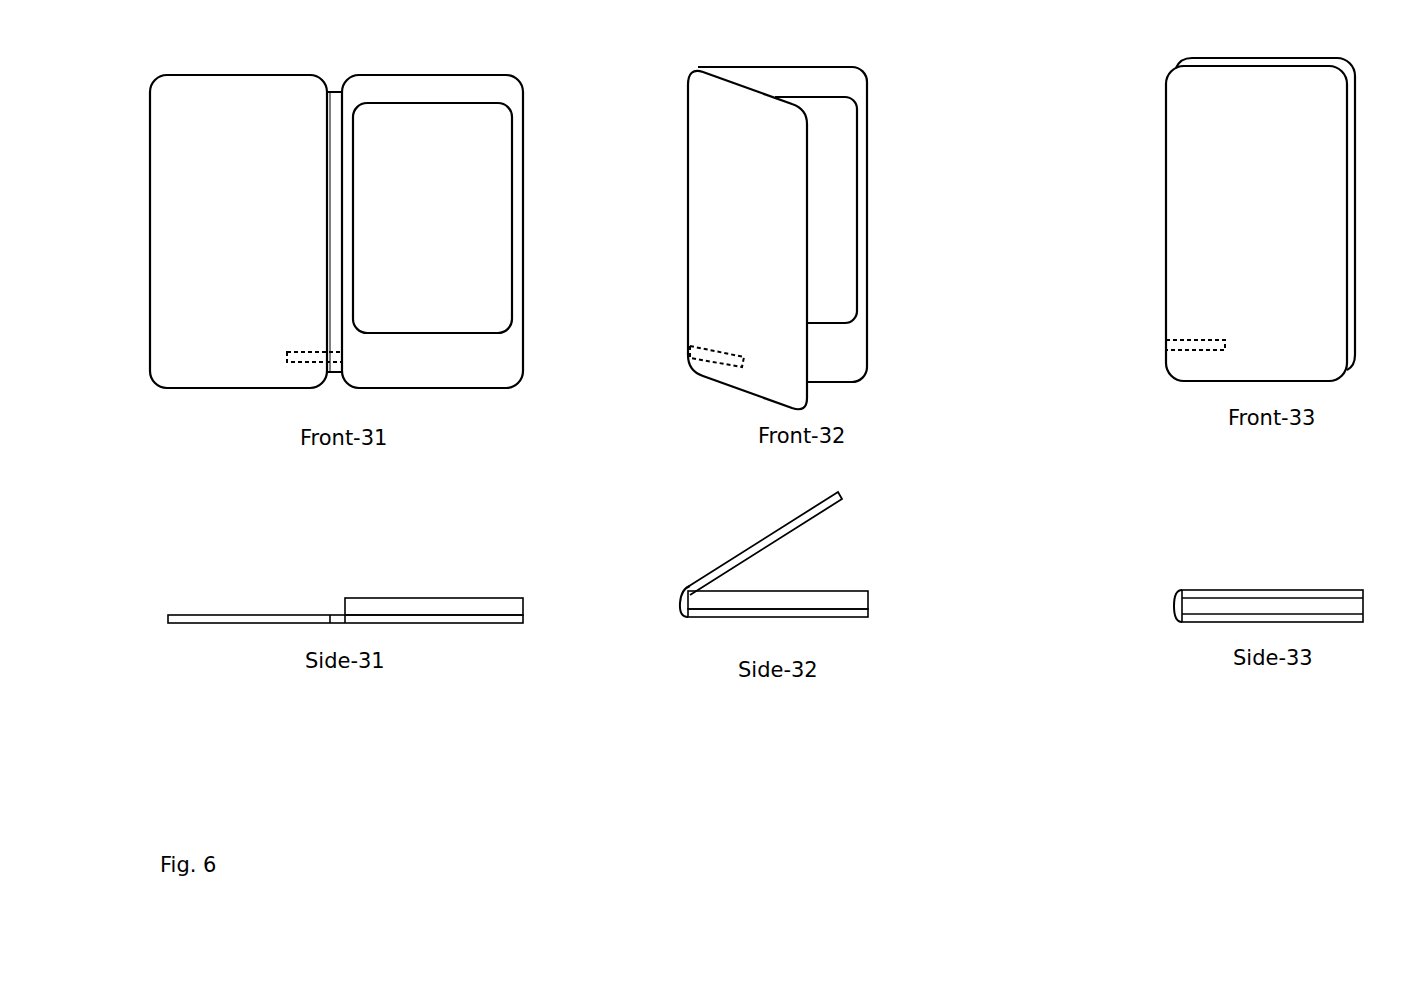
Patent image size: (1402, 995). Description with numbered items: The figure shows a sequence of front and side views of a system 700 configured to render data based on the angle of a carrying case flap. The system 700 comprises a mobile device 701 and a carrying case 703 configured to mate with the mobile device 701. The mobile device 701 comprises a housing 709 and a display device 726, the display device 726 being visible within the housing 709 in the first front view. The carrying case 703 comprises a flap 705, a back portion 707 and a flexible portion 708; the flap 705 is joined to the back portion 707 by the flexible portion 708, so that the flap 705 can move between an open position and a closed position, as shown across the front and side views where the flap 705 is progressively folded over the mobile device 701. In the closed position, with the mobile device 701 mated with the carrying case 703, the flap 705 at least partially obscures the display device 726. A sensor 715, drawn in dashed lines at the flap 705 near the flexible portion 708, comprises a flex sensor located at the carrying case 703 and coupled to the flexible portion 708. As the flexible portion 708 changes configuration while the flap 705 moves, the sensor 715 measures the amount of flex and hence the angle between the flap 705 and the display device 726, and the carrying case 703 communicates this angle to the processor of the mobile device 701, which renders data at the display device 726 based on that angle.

The system 700 is at (262, 779).
The mobile device 701 is at (517, 370).
The carrying case 703 is at (297, 82).
The flap 705 is at (250, 114).
The back portion 707 is at (478, 623).
The flexible portion 708 is at (335, 373).
The housing 709 is at (455, 101).
The sensor 715 is at (295, 353).
The display device 726 is at (498, 139).